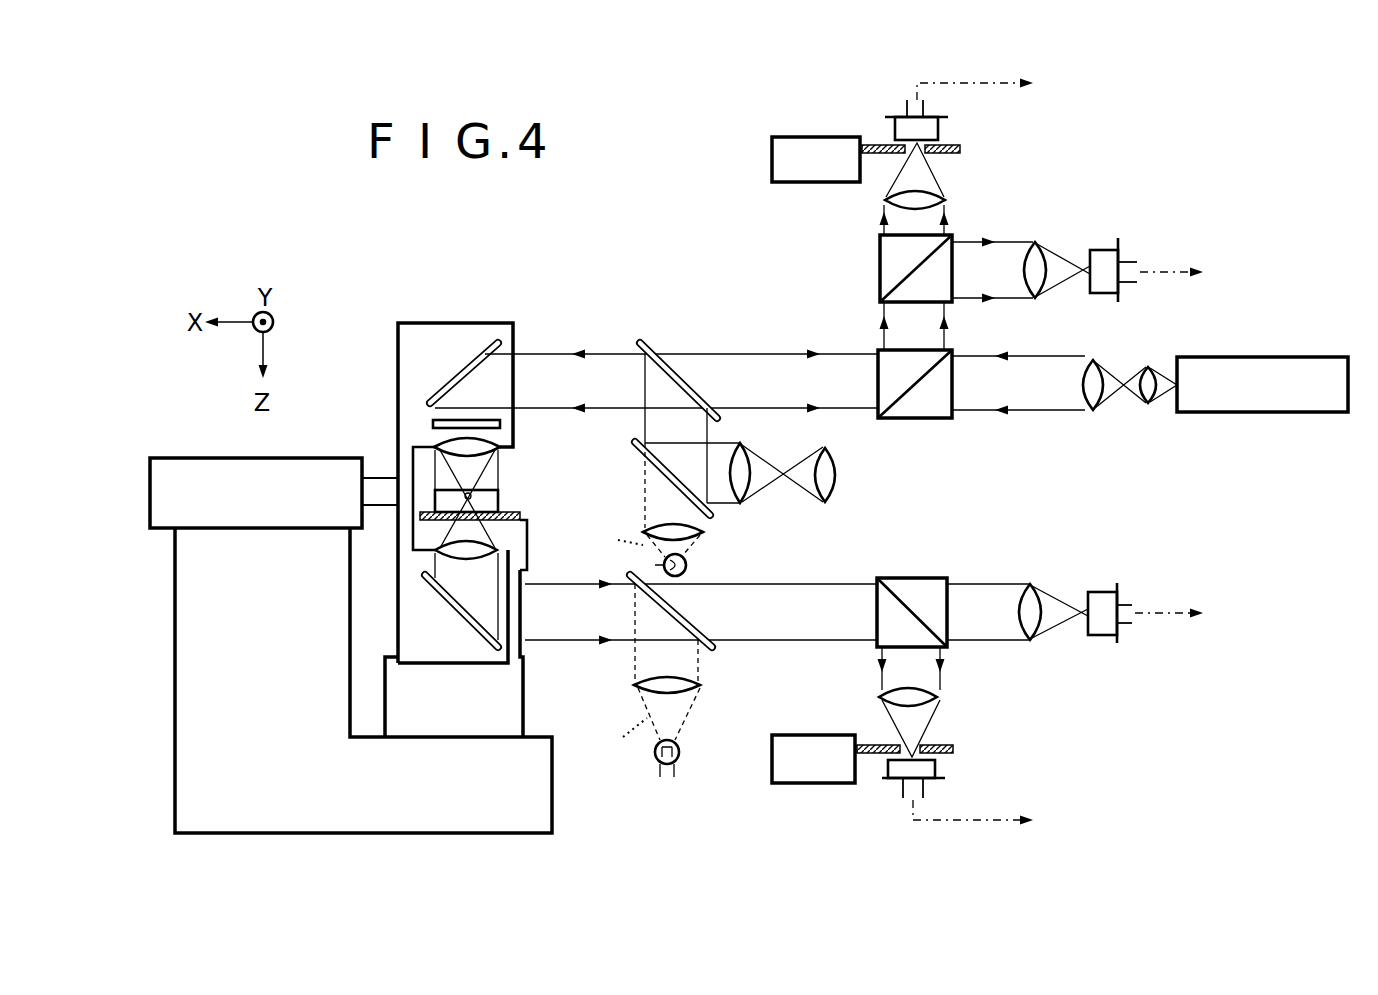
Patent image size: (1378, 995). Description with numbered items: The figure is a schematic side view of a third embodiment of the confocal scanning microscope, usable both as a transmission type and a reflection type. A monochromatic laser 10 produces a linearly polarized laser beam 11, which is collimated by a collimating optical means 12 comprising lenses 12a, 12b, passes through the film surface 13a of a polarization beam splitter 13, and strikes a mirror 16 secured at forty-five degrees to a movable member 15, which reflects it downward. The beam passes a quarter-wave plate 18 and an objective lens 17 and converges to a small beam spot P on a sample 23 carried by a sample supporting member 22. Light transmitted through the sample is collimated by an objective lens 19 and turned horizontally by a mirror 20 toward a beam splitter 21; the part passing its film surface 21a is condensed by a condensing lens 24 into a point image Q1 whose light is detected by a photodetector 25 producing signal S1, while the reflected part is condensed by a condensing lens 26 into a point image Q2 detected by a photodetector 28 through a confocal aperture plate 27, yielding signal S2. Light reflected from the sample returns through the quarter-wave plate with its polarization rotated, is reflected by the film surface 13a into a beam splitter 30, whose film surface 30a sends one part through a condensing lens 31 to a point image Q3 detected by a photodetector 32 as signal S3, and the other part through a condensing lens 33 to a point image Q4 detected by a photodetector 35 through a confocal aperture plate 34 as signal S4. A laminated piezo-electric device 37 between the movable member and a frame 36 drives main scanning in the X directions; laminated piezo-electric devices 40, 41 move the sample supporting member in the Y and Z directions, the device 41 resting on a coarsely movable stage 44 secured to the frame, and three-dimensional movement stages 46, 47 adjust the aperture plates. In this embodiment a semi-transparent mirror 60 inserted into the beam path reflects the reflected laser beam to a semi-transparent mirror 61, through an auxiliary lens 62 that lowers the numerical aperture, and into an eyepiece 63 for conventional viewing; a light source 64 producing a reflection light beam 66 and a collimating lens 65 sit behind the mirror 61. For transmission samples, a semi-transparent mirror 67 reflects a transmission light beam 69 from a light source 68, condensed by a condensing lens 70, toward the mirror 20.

The monochromatic laser 10 is at (1315, 397).
The laser beam 11 is at (600, 350).
The collimating optical means 12 is at (1148, 456).
The lens 12a is at (1158, 398).
The lens 12b is at (1100, 408).
The polarization beam splitter 13 is at (952, 430).
The film surface 13a is at (912, 395).
The movable member 15 is at (418, 323).
The mirror 16 is at (470, 355).
The objective lens 17 is at (433, 448).
The quarter-wave plate 18 is at (433, 422).
The objective lens 19 is at (505, 545).
The mirror 20 is at (457, 615).
The beam splitter 21 is at (896, 568).
The film surface 21a is at (915, 615).
The sample supporting member 22 is at (520, 513).
The sample 23 is at (500, 492).
The condensing lens 24 is at (1017, 585).
The photodetector 25 is at (1100, 592).
The condensing lens 26 is at (925, 693).
The confocal aperture plate 27 is at (955, 748).
The photodetector 28 is at (893, 768).
The beam splitter 30 is at (872, 252).
The film surface 30a is at (903, 277).
The condensing lens 31 is at (1045, 292).
The photodetector 32 is at (1110, 293).
The condensing lens 33 is at (885, 197).
The confocal aperture plate 34 is at (958, 145).
The photodetector 35 is at (892, 128).
The frame 36 is at (287, 710).
The laminated piezo-electric device 37 is at (217, 480).
The laminated piezo-electric device 40 is at (528, 550).
The laminated piezo-electric device 41 is at (523, 622).
The coarsely movable stage 44 is at (507, 717).
The three-dimensional movement stage 46 is at (823, 745).
The three-dimensional movement stage 47 is at (772, 155).
The semi-transparent mirror 60 is at (676, 360).
The semi-transparent mirror 61 is at (630, 445).
The auxiliary lens 62 is at (745, 465).
The eyepiece 63 is at (828, 470).
The light source 64 is at (690, 570).
The collimating lens 65 is at (690, 535).
The reflection light beam 66 is at (619, 527).
The semi-transparent mirror 67 is at (700, 625).
The light source 68 is at (683, 748).
The transmission light beam 69 is at (621, 743).
The condensing lens 70 is at (690, 690).
The beam spot P is at (470, 497).
The point image Q1 is at (1080, 605).
The point image Q2 is at (918, 740).
The point image Q3 is at (1080, 262).
The point image Q4 is at (913, 163).
The transmitted laser beam detection signal S1 is at (1188, 616).
The confocal transmitted laser beam detection signal S2 is at (992, 818).
The reflected laser beam detection signal S3 is at (1192, 274).
The confocal reflected laser beam detection signal S4 is at (997, 85).